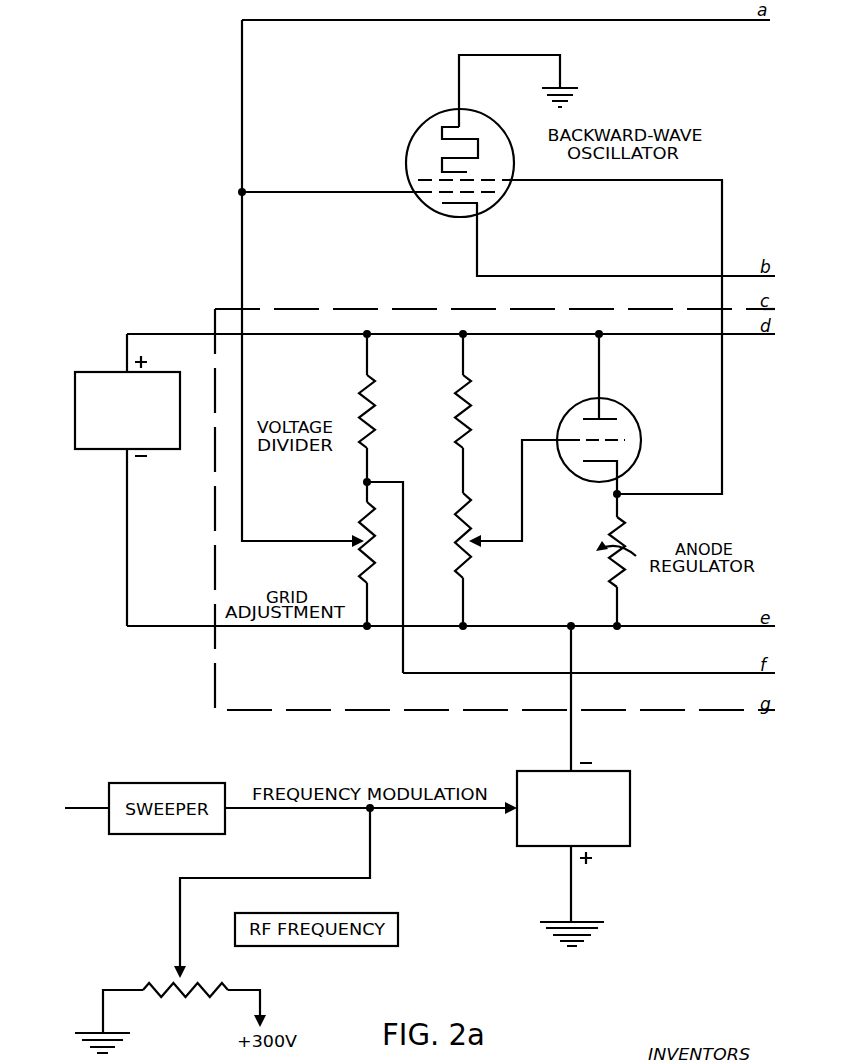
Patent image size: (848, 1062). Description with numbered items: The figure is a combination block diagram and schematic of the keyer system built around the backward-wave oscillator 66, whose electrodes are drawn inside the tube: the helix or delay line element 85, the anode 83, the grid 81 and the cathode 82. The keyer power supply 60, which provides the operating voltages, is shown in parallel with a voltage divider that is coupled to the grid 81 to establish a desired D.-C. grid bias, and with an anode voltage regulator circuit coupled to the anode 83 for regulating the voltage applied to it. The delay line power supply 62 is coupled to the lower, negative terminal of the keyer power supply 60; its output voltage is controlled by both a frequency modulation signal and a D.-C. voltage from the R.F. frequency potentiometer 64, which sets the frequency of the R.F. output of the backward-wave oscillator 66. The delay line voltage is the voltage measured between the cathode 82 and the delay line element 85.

The keyer power supply 60 is at (75, 413).
The delay line power supply 62 is at (630, 813).
The R.F. frequency potentiometer 64 is at (188, 993).
The backward-wave oscillator 66 is at (407, 160).
The grid 81 is at (483, 193).
The cathode 82 is at (478, 205).
The anode 83 is at (428, 181).
The delay line element 85 is at (441, 132).